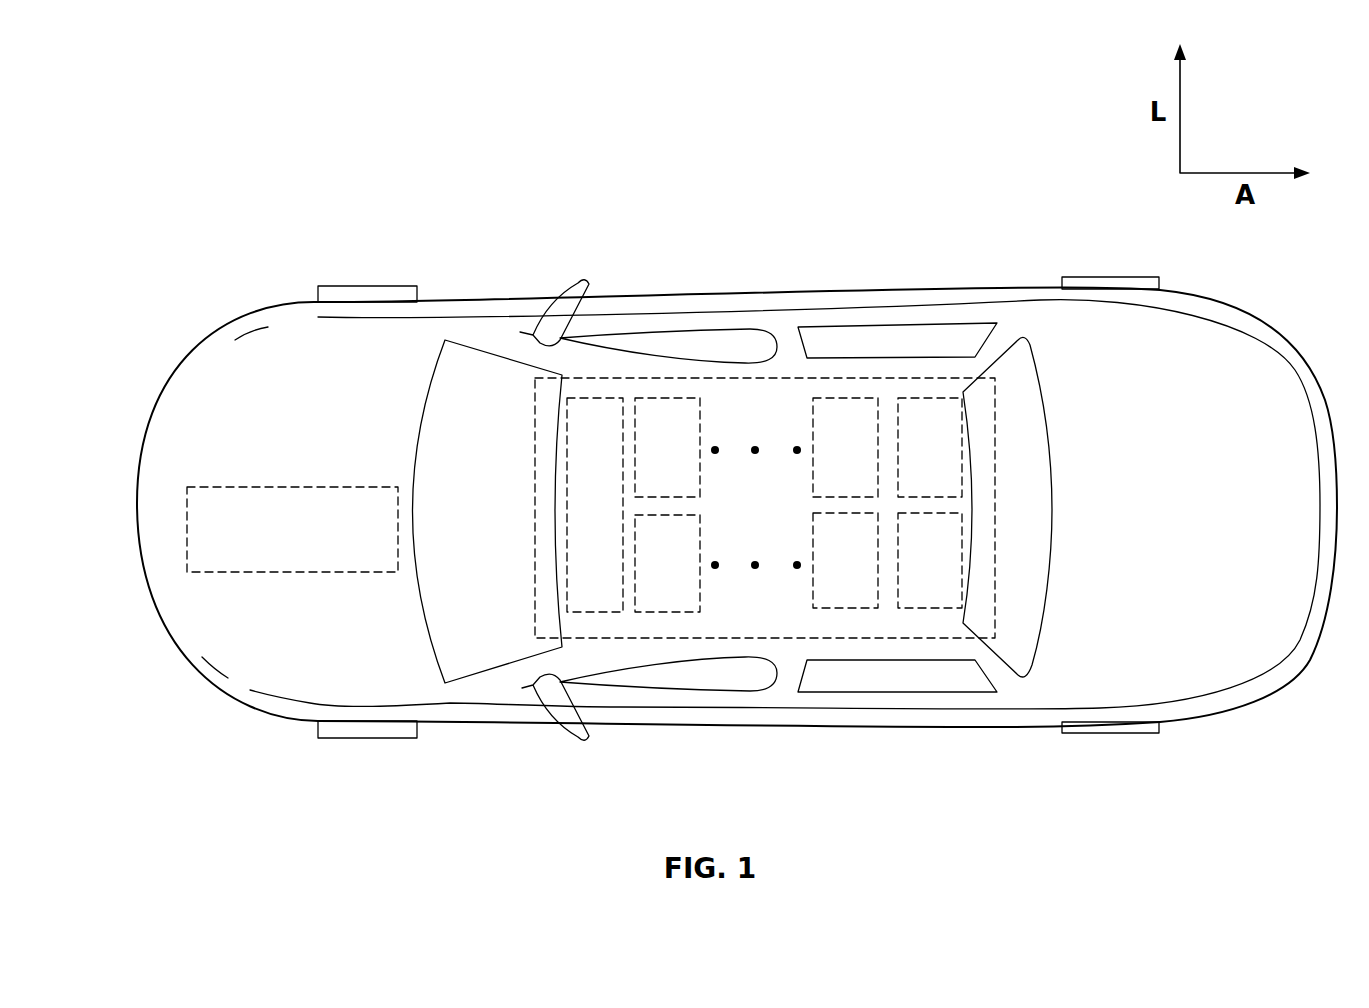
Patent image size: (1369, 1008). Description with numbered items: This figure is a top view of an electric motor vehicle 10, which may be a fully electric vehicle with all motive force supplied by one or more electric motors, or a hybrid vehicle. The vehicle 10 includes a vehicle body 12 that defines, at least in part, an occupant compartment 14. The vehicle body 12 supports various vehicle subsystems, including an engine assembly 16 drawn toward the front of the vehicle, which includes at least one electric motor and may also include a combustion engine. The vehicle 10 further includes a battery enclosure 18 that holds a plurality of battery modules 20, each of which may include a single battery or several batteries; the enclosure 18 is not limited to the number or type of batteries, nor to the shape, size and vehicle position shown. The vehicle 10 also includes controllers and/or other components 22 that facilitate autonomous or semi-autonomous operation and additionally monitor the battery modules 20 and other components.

The electric motor vehicle 10 is at (246, 245).
The vehicle body 12 is at (929, 285).
The occupant compartment 14 is at (700, 678).
The engine assembly 16 is at (242, 486).
The battery enclosure 18 is at (835, 639).
The battery modules 20 is at (650, 461).
The controllers and/or other components 22 is at (578, 528).